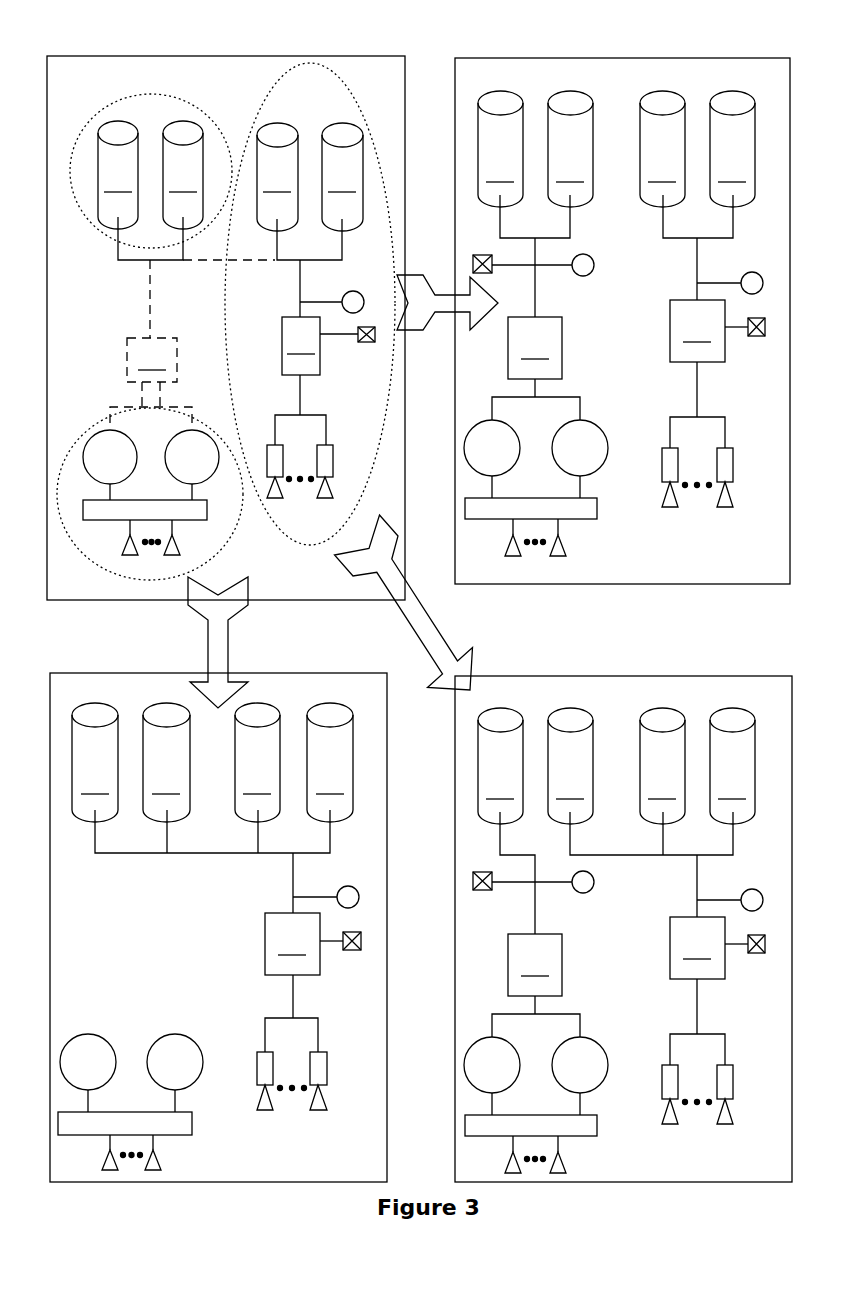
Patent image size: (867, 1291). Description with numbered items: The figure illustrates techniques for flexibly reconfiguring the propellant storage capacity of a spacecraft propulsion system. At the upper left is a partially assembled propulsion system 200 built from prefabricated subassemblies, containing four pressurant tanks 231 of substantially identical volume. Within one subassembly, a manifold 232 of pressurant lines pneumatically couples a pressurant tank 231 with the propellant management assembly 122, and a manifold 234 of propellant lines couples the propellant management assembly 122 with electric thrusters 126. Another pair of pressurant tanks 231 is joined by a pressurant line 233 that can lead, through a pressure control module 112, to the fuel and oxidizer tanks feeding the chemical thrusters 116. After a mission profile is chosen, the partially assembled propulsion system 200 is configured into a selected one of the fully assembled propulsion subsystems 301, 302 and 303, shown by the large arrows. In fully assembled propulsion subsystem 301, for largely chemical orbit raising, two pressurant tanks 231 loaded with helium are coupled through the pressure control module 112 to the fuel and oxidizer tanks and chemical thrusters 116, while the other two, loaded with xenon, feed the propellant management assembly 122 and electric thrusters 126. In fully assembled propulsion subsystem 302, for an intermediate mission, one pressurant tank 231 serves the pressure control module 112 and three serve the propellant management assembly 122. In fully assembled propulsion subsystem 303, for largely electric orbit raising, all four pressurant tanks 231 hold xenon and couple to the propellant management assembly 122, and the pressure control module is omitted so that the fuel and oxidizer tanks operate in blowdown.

The partially assembled propulsion system 200 is at (114, 50).
The pressurant tank 231 is at (413, 457).
The manifold 232 is at (290, 263).
The pressurant line 233 is at (138, 261).
The manifold 234 is at (300, 394).
The pressure control module 112 is at (336, 656).
The propellant management assembly 122 is at (515, 639).
The electric thrusters 126 is at (332, 459).
The chemical thrusters 116 is at (126, 544).
The fully assembled propulsion subsystem 301 is at (529, 44).
The fully assembled propulsion subsystem 302 is at (609, 649).
The fully assembled propulsion subsystem 303 is at (140, 652).